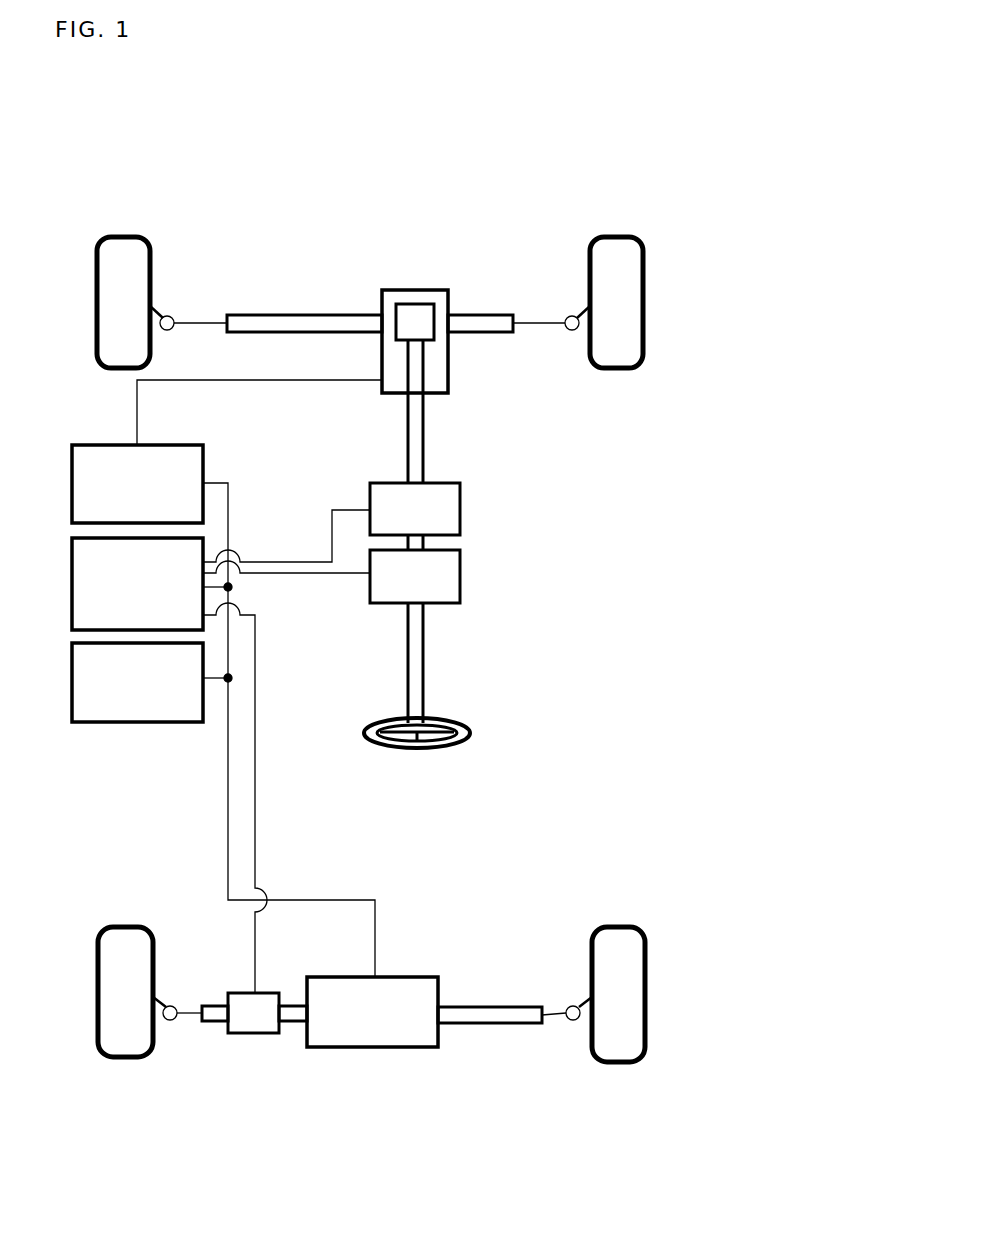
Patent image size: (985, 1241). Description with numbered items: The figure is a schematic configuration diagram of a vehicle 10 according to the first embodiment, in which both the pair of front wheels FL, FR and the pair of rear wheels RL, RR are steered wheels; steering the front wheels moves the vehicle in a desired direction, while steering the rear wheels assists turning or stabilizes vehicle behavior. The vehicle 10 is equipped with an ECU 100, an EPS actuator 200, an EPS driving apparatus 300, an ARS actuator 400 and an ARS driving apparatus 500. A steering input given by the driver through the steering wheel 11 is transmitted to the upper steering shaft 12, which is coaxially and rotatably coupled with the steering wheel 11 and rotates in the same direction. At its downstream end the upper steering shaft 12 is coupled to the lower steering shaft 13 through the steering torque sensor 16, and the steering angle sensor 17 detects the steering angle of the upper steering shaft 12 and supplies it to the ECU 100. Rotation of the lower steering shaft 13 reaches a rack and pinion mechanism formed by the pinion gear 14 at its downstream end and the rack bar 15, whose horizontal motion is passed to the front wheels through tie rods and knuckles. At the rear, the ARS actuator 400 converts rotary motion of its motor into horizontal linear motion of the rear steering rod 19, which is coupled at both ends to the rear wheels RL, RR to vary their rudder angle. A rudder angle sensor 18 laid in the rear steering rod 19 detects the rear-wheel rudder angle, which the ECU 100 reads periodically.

The vehicle 10 is at (578, 167).
The steering wheel 11 is at (365, 733).
The upper steering shaft 12 is at (424, 681).
The lower steering shaft 13 is at (424, 412).
The pinion gear 14 is at (414, 303).
The rack bar 15 is at (255, 314).
The steering torque sensor 16 is at (460, 484).
The steering angle sensor 17 is at (460, 550).
The rudder angle sensor 18 is at (228, 1035).
The rear steering rod 19 is at (292, 1022).
The ECU 100 is at (72, 538).
The EPS actuator 200 is at (448, 370).
The EPS driving apparatus 300 is at (72, 446).
The ARS actuator 400 is at (370, 1047).
The ARS driving apparatus 500 is at (72, 644).
The front left wheel FL is at (97, 252).
The front right wheel FR is at (622, 237).
The rear left wheel RL is at (97, 940).
The rear right wheel RR is at (625, 927).